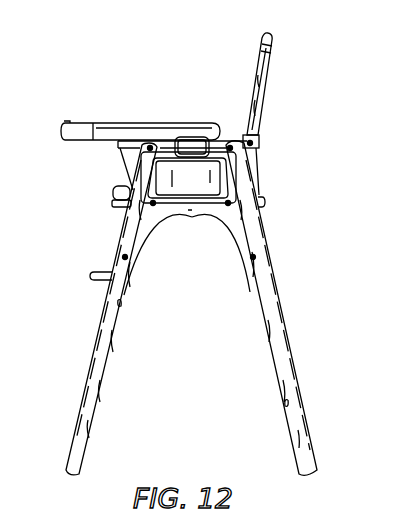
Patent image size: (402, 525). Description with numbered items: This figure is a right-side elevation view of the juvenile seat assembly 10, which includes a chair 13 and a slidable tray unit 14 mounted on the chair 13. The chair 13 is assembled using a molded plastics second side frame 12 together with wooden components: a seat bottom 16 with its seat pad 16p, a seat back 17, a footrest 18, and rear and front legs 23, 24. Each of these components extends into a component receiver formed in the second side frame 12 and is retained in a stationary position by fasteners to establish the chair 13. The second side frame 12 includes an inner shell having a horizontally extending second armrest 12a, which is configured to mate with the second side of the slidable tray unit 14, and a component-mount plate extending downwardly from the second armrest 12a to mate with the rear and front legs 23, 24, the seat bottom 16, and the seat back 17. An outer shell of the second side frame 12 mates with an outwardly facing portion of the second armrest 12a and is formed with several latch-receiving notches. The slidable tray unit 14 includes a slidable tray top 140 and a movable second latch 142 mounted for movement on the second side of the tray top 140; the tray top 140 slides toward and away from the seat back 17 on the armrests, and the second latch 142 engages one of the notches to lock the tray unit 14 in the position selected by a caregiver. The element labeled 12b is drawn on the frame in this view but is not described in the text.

The juvenile seat assembly 10 is at (287, 93).
The second molded side frame 12 is at (219, 227).
The second armrest 12a is at (241, 152).
The frame arch right portion 12b is at (225, 234).
The chair 13 is at (258, 139).
The slidable tray unit 14 is at (140, 108).
The slidable tray top 140 is at (164, 127).
The movable second latch 142 is at (197, 155).
The seat bottom 16 is at (113, 207).
The seat pad 16p is at (122, 188).
The seat back 17 is at (254, 75).
The footrest 18 is at (93, 280).
The rear leg 23 is at (303, 416).
The front leg 24 is at (74, 437).